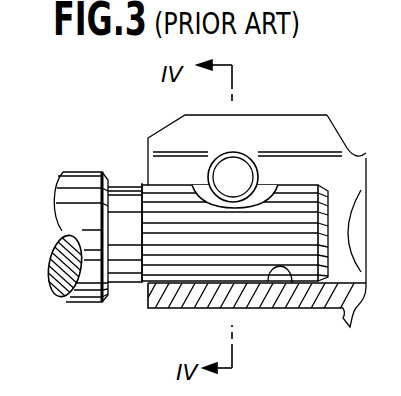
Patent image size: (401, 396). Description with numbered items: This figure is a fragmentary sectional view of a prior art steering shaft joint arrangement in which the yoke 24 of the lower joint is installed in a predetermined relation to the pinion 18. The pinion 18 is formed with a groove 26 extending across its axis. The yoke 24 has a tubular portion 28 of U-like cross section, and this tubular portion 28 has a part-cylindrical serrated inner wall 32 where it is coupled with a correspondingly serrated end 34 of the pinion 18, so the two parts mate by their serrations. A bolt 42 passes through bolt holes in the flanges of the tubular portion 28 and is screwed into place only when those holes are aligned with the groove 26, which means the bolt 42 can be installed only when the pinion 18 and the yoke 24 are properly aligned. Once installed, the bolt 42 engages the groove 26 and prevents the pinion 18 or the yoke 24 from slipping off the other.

The pinion 18 is at (116, 305).
The yoke 24 is at (349, 119).
The groove 26 is at (258, 191).
The tubular portion 28 is at (240, 292).
The part-cylindrical serrated inner wall 32 is at (292, 283).
The serrated end 34 is at (197, 262).
The bolt 42 is at (232, 166).